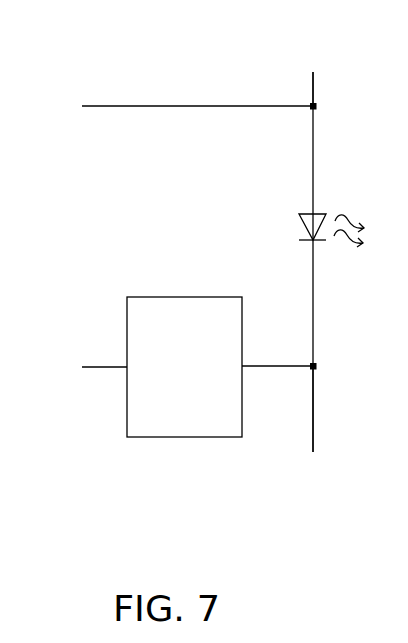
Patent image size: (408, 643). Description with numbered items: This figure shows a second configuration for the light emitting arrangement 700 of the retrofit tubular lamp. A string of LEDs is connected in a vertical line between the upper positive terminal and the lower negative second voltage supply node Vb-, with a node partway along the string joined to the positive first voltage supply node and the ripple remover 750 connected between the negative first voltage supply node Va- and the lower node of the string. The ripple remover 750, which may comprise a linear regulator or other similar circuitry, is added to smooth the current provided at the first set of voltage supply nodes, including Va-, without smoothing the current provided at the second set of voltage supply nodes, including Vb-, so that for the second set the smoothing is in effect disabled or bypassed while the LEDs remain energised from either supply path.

The light emitting arrangement 700 is at (205, 278).
The ripple remover 750 is at (184, 367).
The element LEDs is at (334, 215).
The first voltage supply node (negative) Va- is at (180, 366).
The second voltage supply node (negative) Vb- is at (312, 431).